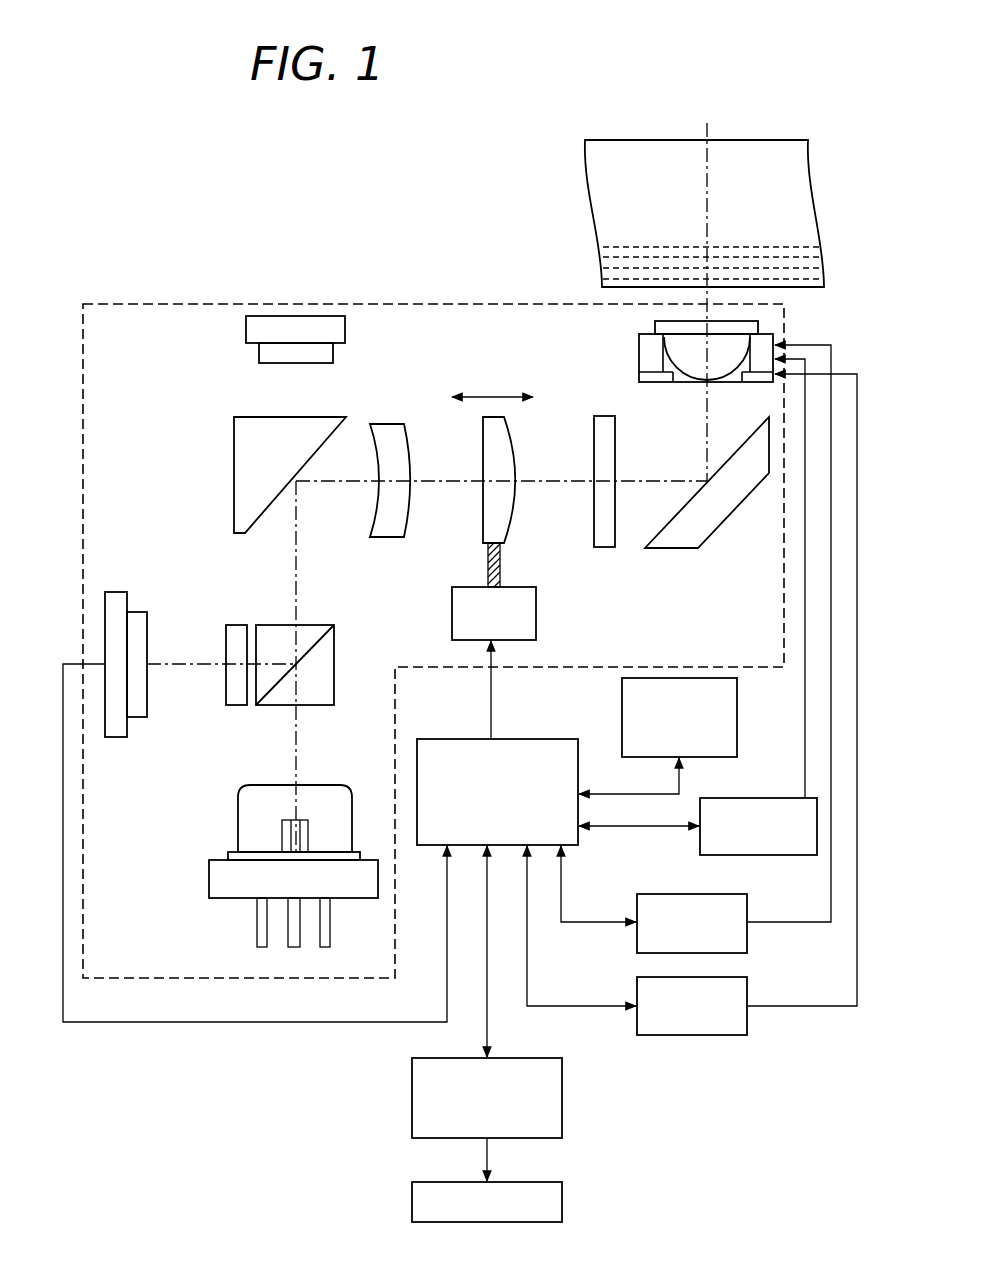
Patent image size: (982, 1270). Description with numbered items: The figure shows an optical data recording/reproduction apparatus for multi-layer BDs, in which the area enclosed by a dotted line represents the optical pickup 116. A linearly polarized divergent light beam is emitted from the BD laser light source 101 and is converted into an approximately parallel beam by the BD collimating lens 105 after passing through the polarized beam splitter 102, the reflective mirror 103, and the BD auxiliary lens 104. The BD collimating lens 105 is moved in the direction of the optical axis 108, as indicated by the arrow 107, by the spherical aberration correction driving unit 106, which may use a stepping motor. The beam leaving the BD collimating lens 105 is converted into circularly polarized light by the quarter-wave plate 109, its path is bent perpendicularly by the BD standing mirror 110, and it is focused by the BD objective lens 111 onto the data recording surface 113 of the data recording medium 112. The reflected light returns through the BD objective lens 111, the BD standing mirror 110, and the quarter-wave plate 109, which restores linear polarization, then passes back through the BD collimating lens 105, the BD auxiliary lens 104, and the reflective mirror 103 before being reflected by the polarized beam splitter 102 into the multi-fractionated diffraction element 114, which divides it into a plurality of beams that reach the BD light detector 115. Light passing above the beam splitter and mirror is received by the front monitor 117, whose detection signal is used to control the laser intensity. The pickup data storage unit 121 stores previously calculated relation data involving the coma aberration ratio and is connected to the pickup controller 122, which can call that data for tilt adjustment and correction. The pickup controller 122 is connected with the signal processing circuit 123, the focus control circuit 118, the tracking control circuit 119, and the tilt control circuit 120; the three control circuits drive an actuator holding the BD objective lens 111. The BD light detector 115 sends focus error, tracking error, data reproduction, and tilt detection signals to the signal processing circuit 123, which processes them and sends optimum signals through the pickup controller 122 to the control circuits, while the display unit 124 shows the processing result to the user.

The BD laser light source 101 is at (238, 815).
The polarized beam splitter 102 is at (312, 705).
The reflective mirror 103 is at (234, 452).
The BD auxiliary lens 104 is at (391, 423).
The BD collimating lens 105 is at (505, 516).
The spherical aberration correction driving unit 106 is at (494, 663).
The arrow 107 is at (492, 383).
The optical axis 108 is at (556, 480).
The quarter-wave plate 109 is at (600, 416).
The BD standing mirror 110 is at (738, 500).
The BD objective lens 111 is at (677, 347).
The data recording medium 112 is at (609, 147).
The data recording surface 113 is at (603, 247).
The multi-fractionated diffraction element 114 is at (236, 624).
The BD light detector 115 is at (140, 612).
The optical pickup 116 is at (364, 304).
The front monitor 117 is at (259, 353).
The focus control circuit 118 is at (748, 906).
The tracking control circuit 119 is at (770, 798).
The tilt control circuit 120 is at (748, 989).
The pickup data storage unit 121 is at (622, 700).
The pickup controller 122 is at (460, 739).
The signal processing circuit 123 is at (562, 1100).
The display unit 124 is at (562, 1200).